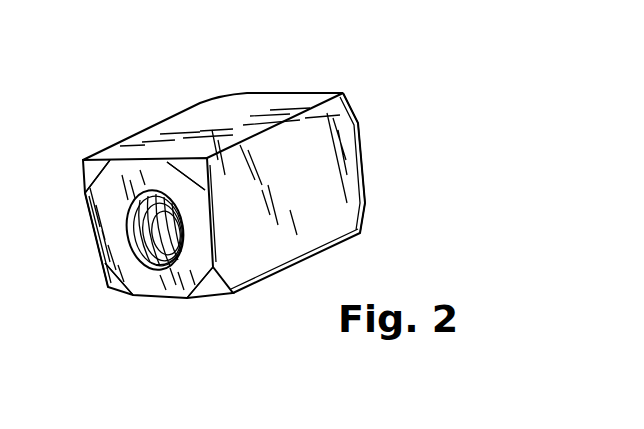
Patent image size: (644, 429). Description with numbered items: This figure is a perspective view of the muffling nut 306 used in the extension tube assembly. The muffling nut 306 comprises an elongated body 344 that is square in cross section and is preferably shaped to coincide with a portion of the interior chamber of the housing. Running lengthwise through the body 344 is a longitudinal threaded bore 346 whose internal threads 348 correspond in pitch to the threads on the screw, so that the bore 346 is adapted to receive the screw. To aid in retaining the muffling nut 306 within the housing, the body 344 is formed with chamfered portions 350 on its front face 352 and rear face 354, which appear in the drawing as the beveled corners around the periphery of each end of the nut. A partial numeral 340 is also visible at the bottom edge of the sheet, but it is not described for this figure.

The muffling nut 306 is at (272, 92).
The elongated body 344 is at (318, 228).
The longitudinal threaded bore 346 is at (163, 235).
The internal threads 348 is at (131, 192).
The chamfered portions 350 is at (193, 168).
The front face 352 is at (92, 220).
The rear face 354 is at (362, 153).
The partial numeral (cut off) 340 is at (224, 425).